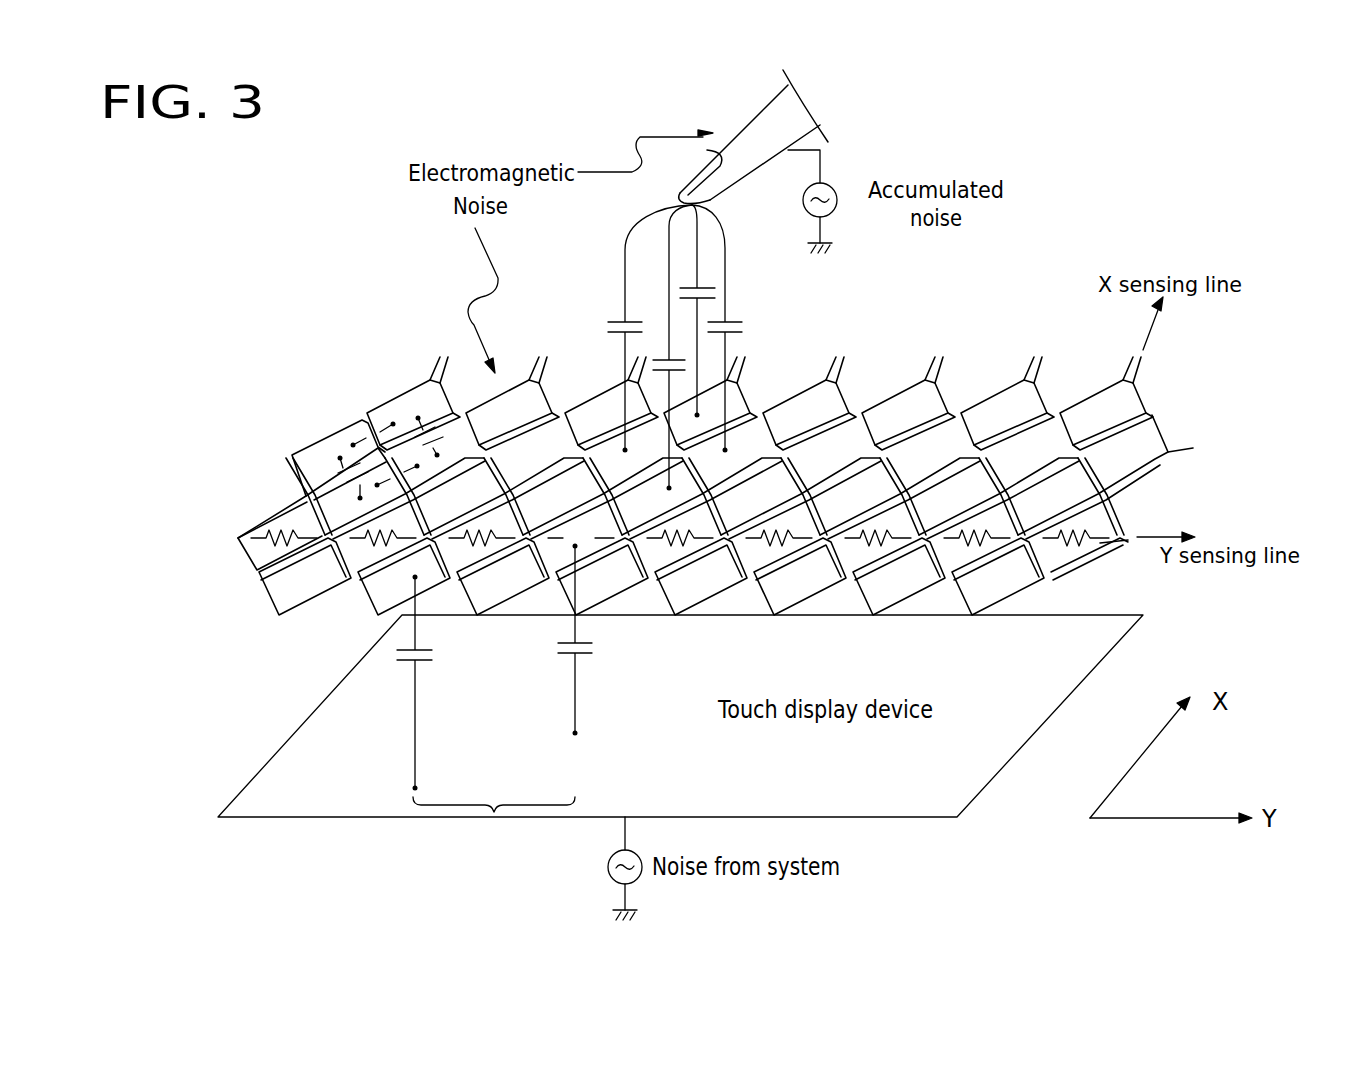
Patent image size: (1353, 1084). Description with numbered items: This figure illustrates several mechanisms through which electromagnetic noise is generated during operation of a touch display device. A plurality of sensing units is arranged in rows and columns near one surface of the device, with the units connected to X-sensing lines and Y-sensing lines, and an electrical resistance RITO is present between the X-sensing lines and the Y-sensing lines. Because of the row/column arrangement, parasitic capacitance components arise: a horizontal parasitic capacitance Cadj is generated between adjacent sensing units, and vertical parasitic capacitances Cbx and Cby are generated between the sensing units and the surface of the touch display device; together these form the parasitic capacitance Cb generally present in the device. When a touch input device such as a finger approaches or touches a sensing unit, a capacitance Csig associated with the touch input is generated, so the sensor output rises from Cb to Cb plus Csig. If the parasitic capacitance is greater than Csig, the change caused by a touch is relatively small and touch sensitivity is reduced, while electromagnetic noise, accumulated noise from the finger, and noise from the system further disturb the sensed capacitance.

The capacitance associated with a touch input Csig is at (633, 348).
The horizontal parasitic capacitance Cadj is at (379, 448).
The electrical resistance RITO is at (675, 514).
The vertical parasitic capacitance Cbx is at (441, 683).
The vertical parasitic capacitance Cby is at (603, 640).
The parasitic capacitance Cb is at (494, 820).